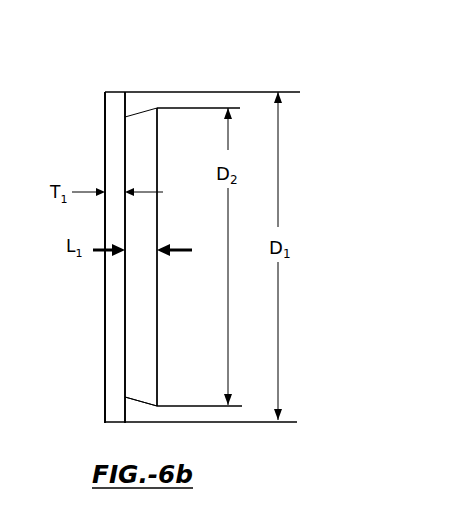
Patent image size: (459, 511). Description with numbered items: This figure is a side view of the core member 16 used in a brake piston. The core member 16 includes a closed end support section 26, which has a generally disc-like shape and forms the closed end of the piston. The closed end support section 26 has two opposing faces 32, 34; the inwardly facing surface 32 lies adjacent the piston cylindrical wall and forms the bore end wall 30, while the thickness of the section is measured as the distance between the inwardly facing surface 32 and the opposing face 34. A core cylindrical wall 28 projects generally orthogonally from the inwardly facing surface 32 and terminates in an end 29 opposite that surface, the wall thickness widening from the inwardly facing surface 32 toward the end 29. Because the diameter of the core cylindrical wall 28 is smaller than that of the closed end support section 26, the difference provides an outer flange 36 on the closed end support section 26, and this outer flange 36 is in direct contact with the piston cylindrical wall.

The core member 16 is at (84, 428).
The closed end support section 26 is at (110, 303).
The core cylindrical wall 28 is at (138, 136).
The end 29 is at (157, 323).
The bore end wall 30 is at (125, 340).
The inwardly facing surface 32 is at (187, 367).
The opposing face 34 is at (105, 367).
The outer flange 36 is at (125, 102).